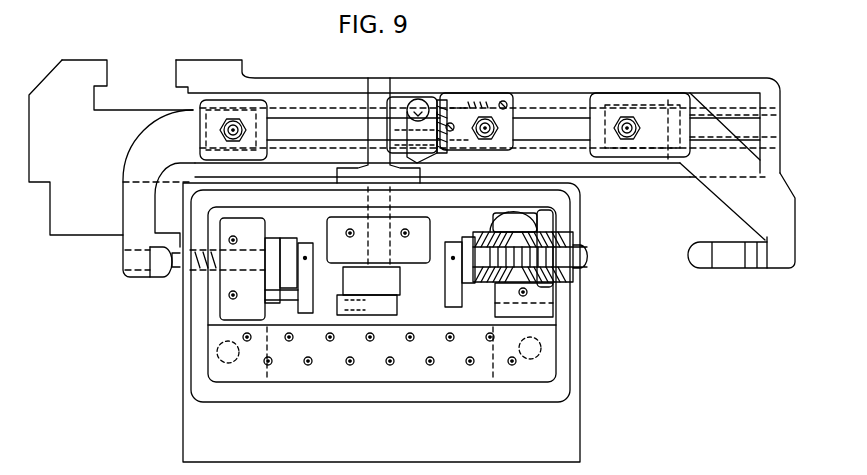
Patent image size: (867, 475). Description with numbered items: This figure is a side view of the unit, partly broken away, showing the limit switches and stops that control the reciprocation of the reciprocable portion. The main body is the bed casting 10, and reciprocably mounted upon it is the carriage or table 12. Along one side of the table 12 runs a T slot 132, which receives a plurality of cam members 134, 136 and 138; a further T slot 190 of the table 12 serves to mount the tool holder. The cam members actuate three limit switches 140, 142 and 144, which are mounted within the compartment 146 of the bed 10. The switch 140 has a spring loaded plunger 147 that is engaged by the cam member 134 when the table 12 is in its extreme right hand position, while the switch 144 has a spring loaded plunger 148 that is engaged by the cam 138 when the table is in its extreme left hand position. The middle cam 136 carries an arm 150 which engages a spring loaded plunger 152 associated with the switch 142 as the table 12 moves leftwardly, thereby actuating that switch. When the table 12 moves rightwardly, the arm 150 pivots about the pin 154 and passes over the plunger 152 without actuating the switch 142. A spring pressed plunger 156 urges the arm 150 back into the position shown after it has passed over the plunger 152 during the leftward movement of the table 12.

The bed casting 10 is at (580, 317).
The table 12 is at (713, 82).
The T slot 132 is at (740, 117).
The cam member 134 is at (122, 240).
The cam member 136 is at (447, 97).
The cam member 138 is at (717, 187).
The limit switch 140 is at (247, 292).
The limit switch 142 is at (407, 255).
The limit switch 144 is at (556, 335).
The compartment 146 is at (213, 332).
The spring loaded plunger 147 is at (177, 273).
The spring loaded plunger 148 is at (583, 255).
The arm 150 is at (407, 132).
The spring loaded plunger 152 is at (368, 78).
The pin 154 is at (418, 99).
The spring pressed plunger 156 is at (442, 107).
The T slot 190 is at (108, 82).